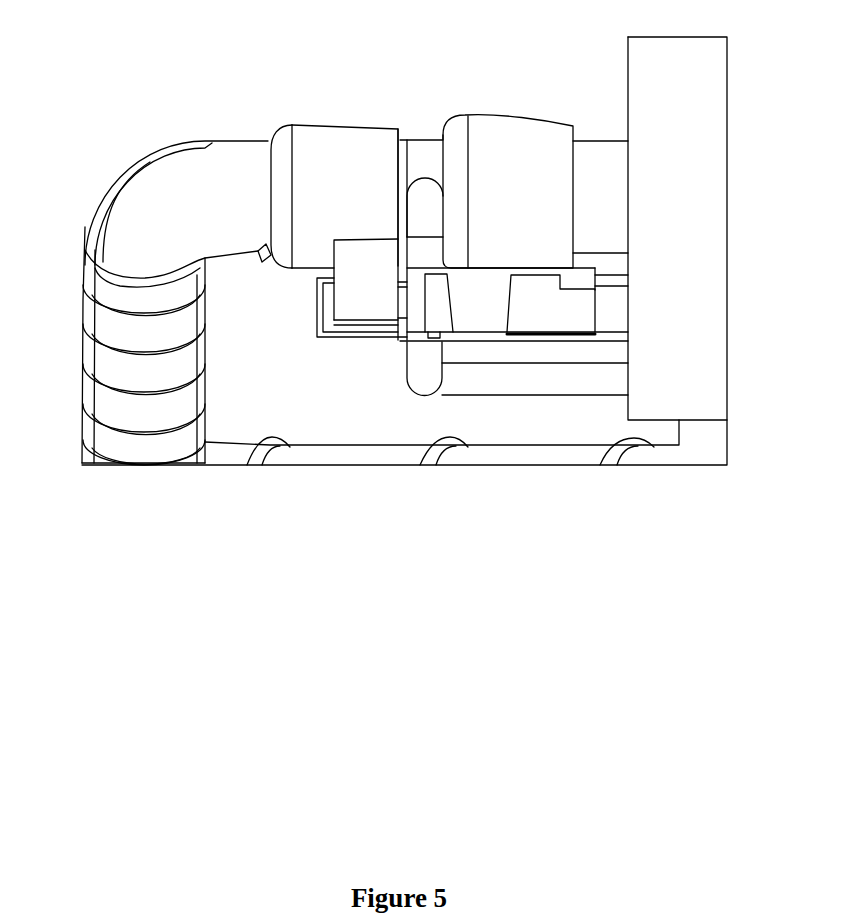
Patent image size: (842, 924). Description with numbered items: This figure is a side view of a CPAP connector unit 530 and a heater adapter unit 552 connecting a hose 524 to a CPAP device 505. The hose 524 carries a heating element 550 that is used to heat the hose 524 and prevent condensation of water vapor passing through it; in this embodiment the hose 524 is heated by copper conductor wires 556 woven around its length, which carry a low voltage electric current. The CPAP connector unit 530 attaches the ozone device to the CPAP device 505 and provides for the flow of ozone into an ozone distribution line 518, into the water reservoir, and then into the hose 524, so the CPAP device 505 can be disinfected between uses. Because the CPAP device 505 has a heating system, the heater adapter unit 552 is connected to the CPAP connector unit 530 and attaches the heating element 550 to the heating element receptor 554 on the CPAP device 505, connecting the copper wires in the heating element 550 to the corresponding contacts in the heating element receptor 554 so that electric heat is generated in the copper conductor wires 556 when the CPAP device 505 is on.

The CPAP device 505 is at (696, 404).
The ozone distribution line 518 is at (547, 387).
The hose 524 is at (213, 172).
The CPAP connector unit 530 is at (503, 138).
The heating element 550 is at (366, 309).
The heater adapter unit 552 is at (480, 317).
The heating element receptor 554 is at (612, 315).
The copper conductor wires 556 is at (75, 315).